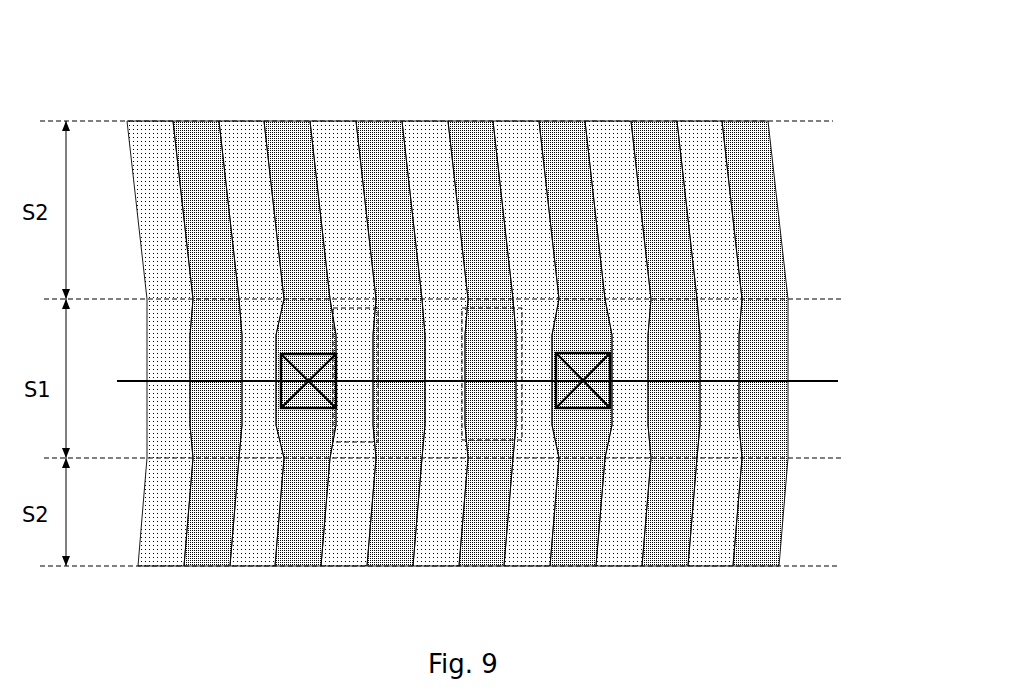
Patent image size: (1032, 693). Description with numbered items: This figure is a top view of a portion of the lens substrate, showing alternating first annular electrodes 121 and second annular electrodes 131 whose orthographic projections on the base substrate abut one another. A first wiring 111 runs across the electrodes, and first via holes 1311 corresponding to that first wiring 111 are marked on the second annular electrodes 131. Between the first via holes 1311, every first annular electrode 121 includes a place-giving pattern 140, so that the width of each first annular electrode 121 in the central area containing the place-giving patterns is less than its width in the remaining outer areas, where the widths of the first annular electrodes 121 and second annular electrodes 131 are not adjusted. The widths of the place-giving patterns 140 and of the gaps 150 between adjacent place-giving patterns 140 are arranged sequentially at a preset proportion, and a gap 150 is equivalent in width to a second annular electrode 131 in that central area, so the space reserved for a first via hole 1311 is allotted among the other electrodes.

The first wiring 111 is at (825, 378).
The first annular electrode 121 is at (430, 147).
The second annular electrode 131 is at (565, 138).
The first via hole 1311 is at (310, 397).
The place-giving pattern 140 is at (367, 440).
The gap 150 is at (490, 440).